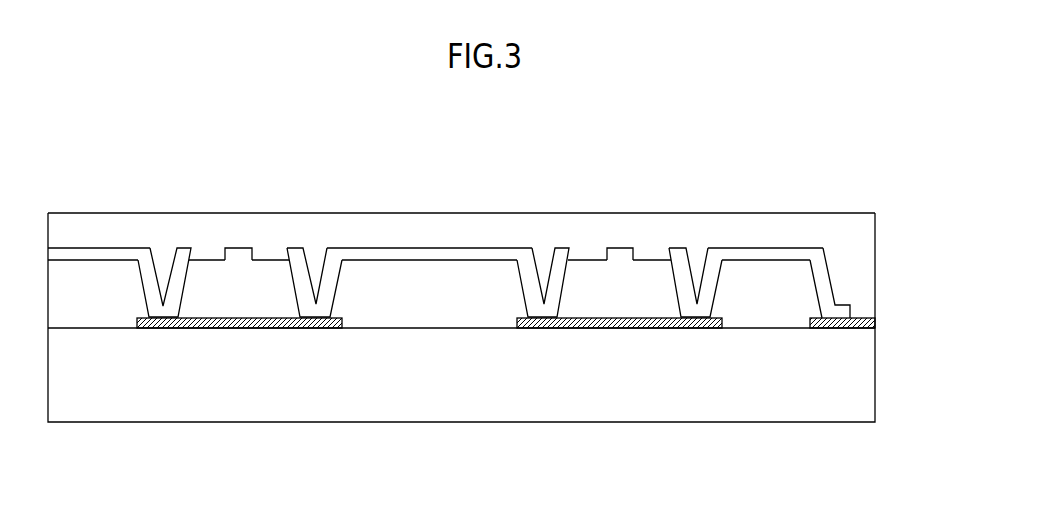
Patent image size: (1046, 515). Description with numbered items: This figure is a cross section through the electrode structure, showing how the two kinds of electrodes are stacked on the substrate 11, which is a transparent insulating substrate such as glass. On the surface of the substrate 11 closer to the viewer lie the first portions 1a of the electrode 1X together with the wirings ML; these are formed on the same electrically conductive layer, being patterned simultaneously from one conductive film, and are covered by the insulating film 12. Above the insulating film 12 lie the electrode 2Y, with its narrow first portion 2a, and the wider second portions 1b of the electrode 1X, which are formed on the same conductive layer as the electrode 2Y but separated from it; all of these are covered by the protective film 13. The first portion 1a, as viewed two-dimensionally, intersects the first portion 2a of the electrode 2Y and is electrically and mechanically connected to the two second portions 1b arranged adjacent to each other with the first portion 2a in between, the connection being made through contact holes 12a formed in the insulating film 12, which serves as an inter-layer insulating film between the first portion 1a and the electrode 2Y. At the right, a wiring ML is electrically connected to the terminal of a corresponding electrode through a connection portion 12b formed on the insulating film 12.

The first portion 1a is at (225, 330).
The second portion 1b is at (88, 248).
The electrode 1X is at (763, 247).
The electrode 2Y is at (462, 193).
The first portion 2a is at (242, 247).
The substrate 11 is at (783, 408).
The insulating film 12 is at (860, 295).
The contact hole 12a is at (140, 285).
The connection portion 12b is at (820, 280).
The protective film 13 is at (138, 227).
The wiring ML is at (840, 328).